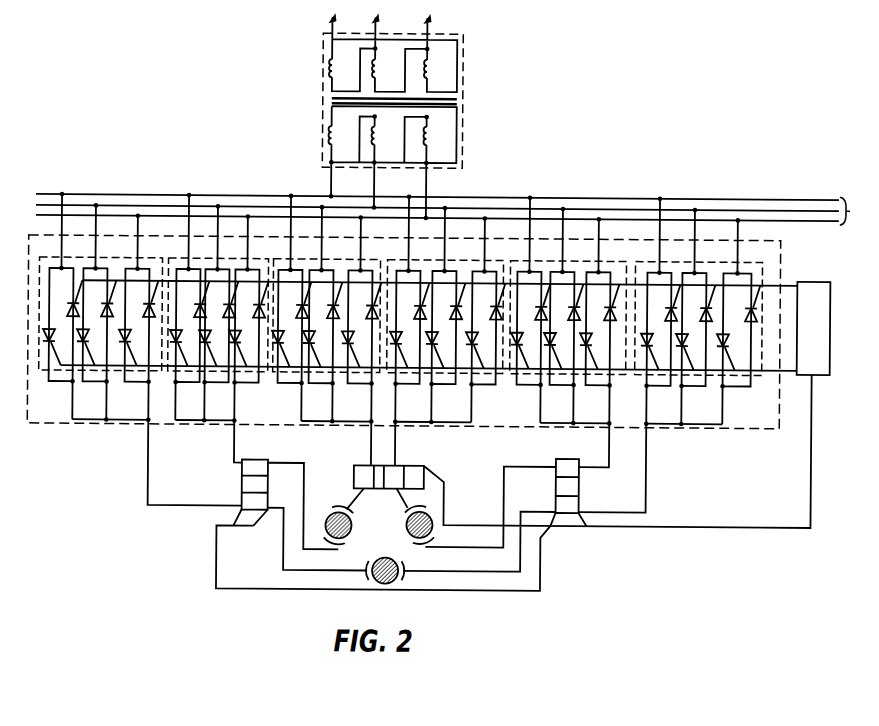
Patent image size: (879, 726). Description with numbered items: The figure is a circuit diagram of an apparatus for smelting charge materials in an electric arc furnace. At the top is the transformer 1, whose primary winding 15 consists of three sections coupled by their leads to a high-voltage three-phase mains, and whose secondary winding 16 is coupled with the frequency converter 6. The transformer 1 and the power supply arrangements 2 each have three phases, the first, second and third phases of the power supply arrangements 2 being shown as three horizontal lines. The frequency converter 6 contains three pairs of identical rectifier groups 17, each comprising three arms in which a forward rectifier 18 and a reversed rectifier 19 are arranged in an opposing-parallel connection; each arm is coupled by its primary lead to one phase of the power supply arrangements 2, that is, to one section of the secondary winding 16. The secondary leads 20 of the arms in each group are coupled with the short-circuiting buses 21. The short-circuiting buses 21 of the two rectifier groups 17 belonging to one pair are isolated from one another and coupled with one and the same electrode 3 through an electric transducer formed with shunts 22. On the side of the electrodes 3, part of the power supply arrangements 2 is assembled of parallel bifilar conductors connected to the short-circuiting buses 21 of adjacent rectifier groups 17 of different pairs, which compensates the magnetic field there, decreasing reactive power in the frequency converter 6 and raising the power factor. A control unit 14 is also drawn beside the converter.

The transformer 1 is at (405, 117).
The power supply arrangements 2 is at (583, 197).
The electrode 3 is at (348, 535).
The frequency converter 6 is at (784, 251).
The control unit 14 is at (820, 307).
The primary winding 15 is at (377, 72).
The secondary winding 16 is at (377, 140).
The rectifier groups 17 is at (41, 382).
The forward rectifier 18 is at (52, 329).
The reversed rectifier 19 is at (72, 321).
The secondary leads 20 is at (73, 401).
The short-circuiting buses 21 is at (112, 423).
The shunts 22 is at (254, 470).